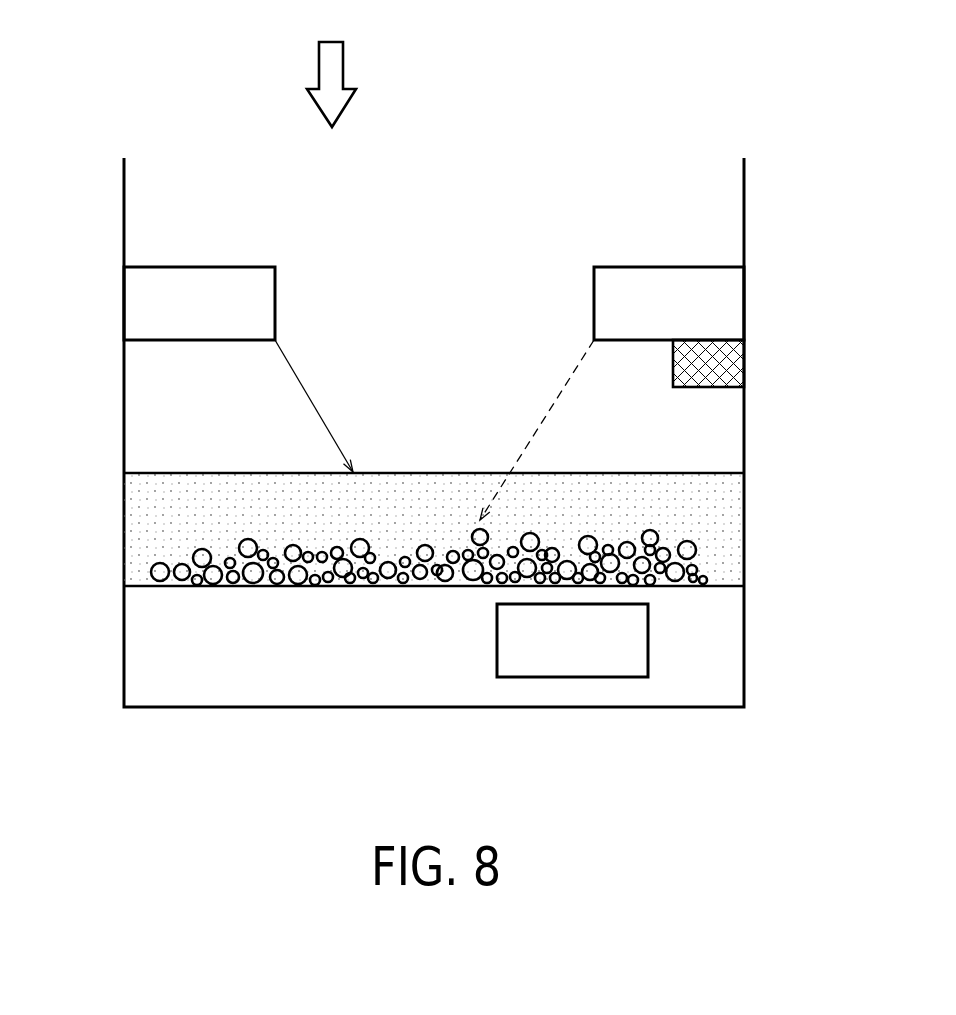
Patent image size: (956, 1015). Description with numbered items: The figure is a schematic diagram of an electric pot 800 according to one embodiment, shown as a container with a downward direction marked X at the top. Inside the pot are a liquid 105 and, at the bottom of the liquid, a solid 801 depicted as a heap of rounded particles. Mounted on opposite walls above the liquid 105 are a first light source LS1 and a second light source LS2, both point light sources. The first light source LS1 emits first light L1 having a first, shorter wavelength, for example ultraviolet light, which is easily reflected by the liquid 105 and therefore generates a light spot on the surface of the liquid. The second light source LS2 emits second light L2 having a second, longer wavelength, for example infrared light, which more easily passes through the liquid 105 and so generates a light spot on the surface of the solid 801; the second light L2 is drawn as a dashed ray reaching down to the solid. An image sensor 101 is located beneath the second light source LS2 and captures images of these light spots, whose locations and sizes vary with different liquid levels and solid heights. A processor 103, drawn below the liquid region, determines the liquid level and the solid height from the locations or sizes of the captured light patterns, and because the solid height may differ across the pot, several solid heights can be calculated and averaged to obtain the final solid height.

The electric pot 800 is at (670, 82).
The first light source LS1 is at (133, 287).
The second light source LS2 is at (735, 286).
The image sensor 101 is at (733, 360).
The liquid 105 is at (135, 527).
The solid 801 is at (708, 578).
The processor 103 is at (623, 677).
The first light L1 is at (300, 378).
The second light L2 is at (572, 378).
The direction X is at (331, 63).